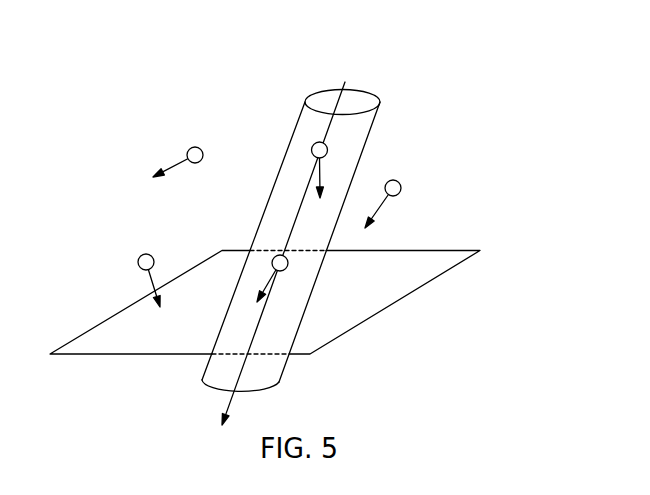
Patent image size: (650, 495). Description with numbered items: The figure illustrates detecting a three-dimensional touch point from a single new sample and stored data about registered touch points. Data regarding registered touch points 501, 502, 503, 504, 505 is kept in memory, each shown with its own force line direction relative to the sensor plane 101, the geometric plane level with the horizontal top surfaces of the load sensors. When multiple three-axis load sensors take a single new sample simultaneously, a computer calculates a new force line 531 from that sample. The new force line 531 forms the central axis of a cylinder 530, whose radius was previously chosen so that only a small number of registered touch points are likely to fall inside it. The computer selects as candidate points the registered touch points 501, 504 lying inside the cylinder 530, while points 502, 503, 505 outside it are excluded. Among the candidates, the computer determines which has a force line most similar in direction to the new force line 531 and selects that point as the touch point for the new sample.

The sensor plane 101 is at (463, 249).
The cylinder 530 is at (368, 140).
The new force line 531 is at (374, 97).
The registered touch point 501 is at (273, 257).
The registered touch point 502 is at (401, 186).
The registered touch point 503 is at (188, 150).
The registered touch point 504 is at (312, 147).
The registered touch point 505 is at (140, 257).